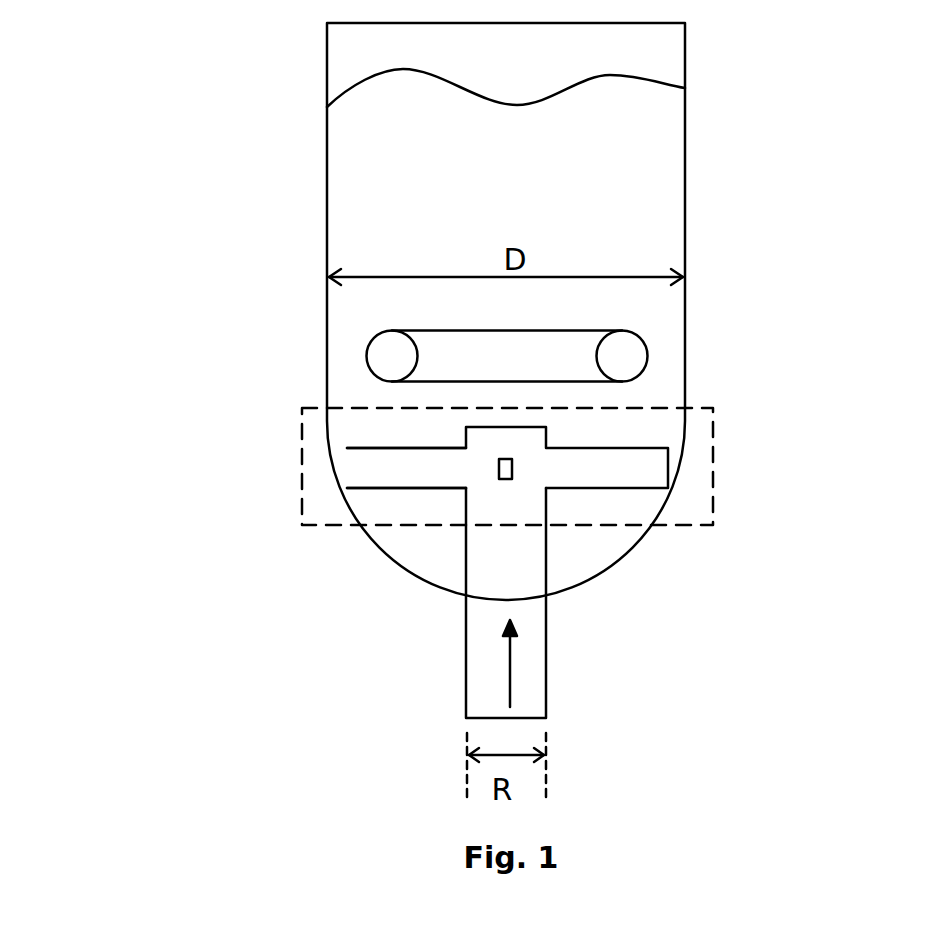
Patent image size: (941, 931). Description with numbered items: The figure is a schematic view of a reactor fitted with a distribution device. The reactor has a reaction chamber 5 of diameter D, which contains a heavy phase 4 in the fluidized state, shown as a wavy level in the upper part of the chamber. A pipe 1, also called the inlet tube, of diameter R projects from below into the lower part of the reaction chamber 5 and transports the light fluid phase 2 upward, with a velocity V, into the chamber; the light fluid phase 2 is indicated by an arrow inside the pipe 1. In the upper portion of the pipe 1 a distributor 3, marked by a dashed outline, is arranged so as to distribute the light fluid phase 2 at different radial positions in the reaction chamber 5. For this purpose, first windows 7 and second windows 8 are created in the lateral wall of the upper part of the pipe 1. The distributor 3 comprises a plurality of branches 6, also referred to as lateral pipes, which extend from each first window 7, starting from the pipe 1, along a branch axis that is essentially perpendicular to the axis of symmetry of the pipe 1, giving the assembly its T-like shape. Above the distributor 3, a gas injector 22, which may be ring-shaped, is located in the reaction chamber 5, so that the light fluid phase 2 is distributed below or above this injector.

The pipe 1 is at (546, 693).
The light fluid phase 2 is at (500, 663).
The distributor 3 is at (713, 432).
The heavy phase 4 is at (635, 135).
The reaction chamber 5 is at (327, 153).
The branches 6 is at (347, 463).
The first windows 7 is at (467, 463).
The second windows 8 is at (513, 479).
The gas injector 22 is at (642, 337).